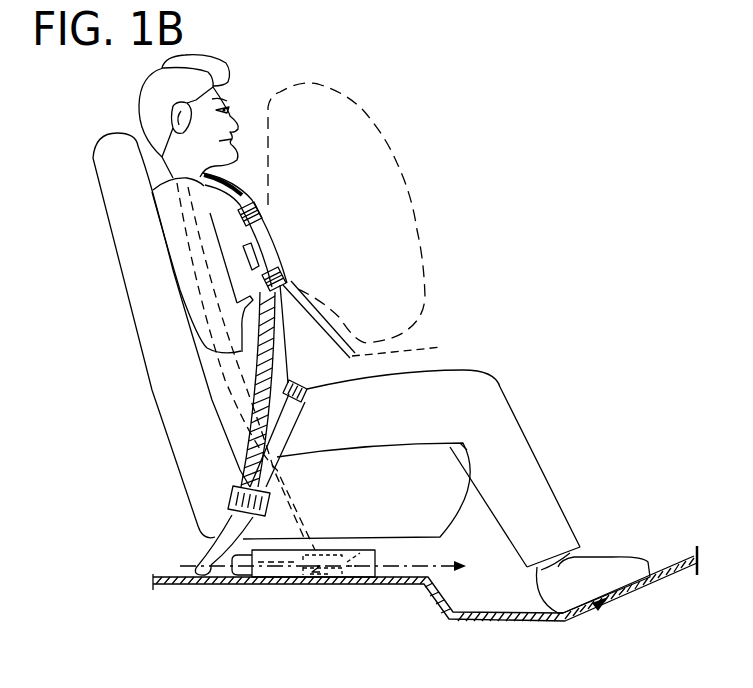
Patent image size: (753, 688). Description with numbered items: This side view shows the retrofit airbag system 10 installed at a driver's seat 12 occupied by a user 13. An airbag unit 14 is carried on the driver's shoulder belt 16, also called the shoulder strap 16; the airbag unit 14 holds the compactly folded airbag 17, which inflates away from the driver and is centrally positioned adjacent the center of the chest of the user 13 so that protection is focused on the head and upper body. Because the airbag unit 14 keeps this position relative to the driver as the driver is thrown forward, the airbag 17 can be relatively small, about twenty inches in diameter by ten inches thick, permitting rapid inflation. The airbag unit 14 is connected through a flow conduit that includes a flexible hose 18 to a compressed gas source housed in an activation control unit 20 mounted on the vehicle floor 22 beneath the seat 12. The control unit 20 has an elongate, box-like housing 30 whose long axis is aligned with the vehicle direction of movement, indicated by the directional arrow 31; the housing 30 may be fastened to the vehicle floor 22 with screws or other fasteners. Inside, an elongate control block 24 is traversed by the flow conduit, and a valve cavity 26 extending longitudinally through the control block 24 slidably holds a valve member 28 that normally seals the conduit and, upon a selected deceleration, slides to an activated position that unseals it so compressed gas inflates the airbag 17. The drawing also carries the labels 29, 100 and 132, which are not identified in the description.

The retrofit airbag system 10 is at (393, 79).
The driver's seat 12 is at (145, 420).
The user 13 is at (227, 72).
The airbag unit 14 is at (282, 227).
The shoulder belt 16 is at (257, 368).
The airbag 17 is at (378, 139).
The flexible hose 18 is at (190, 277).
The activation control unit 20 is at (353, 592).
The vehicle floor 22 is at (170, 572).
The control block 24 is at (337, 574).
The valve cavity 26 is at (307, 577).
The valve member 28 is at (360, 551).
The anchor 29 is at (240, 572).
The housing 30 is at (343, 551).
The directional arrow 31 is at (410, 566).
The sensor 100 is at (268, 571).
The belt webbing portion 132 is at (275, 259).